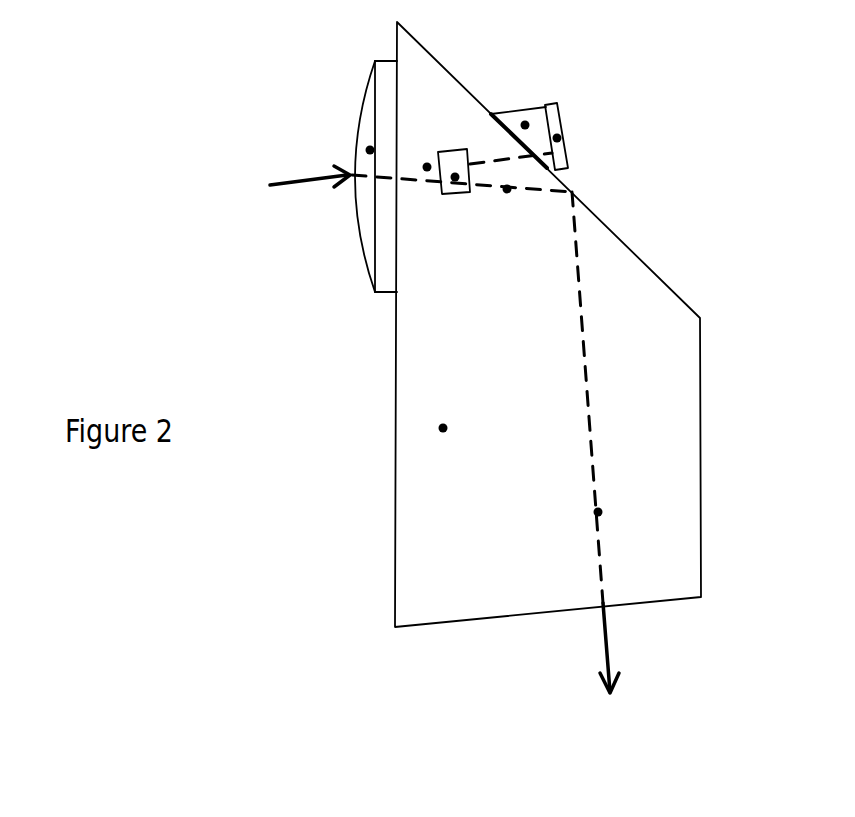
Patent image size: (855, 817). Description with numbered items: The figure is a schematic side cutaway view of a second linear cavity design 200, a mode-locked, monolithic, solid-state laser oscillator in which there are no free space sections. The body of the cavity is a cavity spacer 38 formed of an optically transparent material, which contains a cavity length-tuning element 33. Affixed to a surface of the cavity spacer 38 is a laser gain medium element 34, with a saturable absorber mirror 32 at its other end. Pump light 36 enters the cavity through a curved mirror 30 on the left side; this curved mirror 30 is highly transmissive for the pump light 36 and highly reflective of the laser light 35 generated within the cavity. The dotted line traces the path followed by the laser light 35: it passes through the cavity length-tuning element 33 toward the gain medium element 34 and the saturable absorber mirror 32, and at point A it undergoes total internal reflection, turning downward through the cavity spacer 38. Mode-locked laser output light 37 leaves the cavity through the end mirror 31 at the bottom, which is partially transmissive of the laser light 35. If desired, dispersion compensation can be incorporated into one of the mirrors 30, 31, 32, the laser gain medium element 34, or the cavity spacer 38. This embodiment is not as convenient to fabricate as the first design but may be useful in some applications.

The second linear cavity design 200 is at (802, 241).
The curved mirror 30 is at (334, 197).
The end mirror 31 is at (640, 612).
The saturable absorber mirror 32 is at (560, 138).
The cavity length-tuning element 33 is at (455, 180).
The laser gain medium element 34 is at (525, 123).
The laser light 35 is at (427, 165).
The pump light 36 is at (289, 185).
The mode-locked laser output light 37 is at (615, 671).
The cavity spacer 38 is at (368, 150).